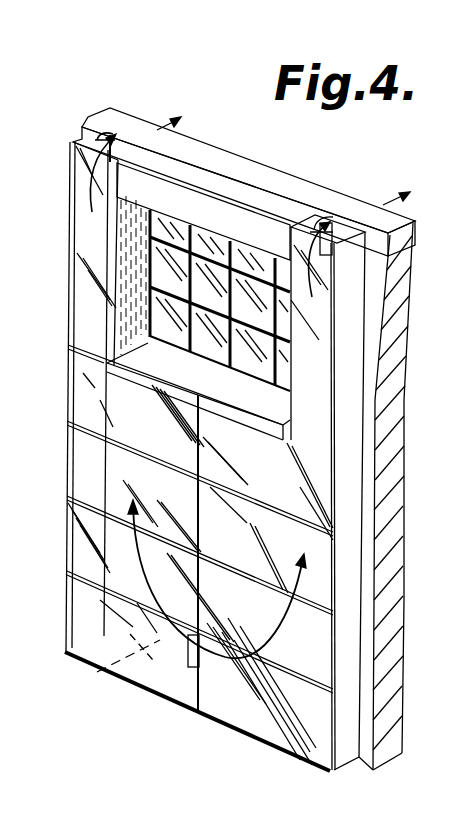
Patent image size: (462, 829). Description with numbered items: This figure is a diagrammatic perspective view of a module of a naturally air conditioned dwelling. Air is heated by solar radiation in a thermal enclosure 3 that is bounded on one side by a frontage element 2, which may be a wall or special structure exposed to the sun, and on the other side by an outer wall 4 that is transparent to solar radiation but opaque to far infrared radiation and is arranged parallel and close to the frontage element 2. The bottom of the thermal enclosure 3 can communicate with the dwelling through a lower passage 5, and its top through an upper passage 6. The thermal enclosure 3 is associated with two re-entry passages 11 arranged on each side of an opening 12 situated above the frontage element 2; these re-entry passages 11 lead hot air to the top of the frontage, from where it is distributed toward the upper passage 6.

The frontage element 2 is at (400, 490).
The thermal enclosure 3 is at (100, 670).
The outer wall 4 is at (80, 548).
The lower passage 5 is at (231, 672).
The upper passage 6 is at (108, 166).
The re-entry passage 11 is at (84, 288).
The opening 12 is at (204, 266).